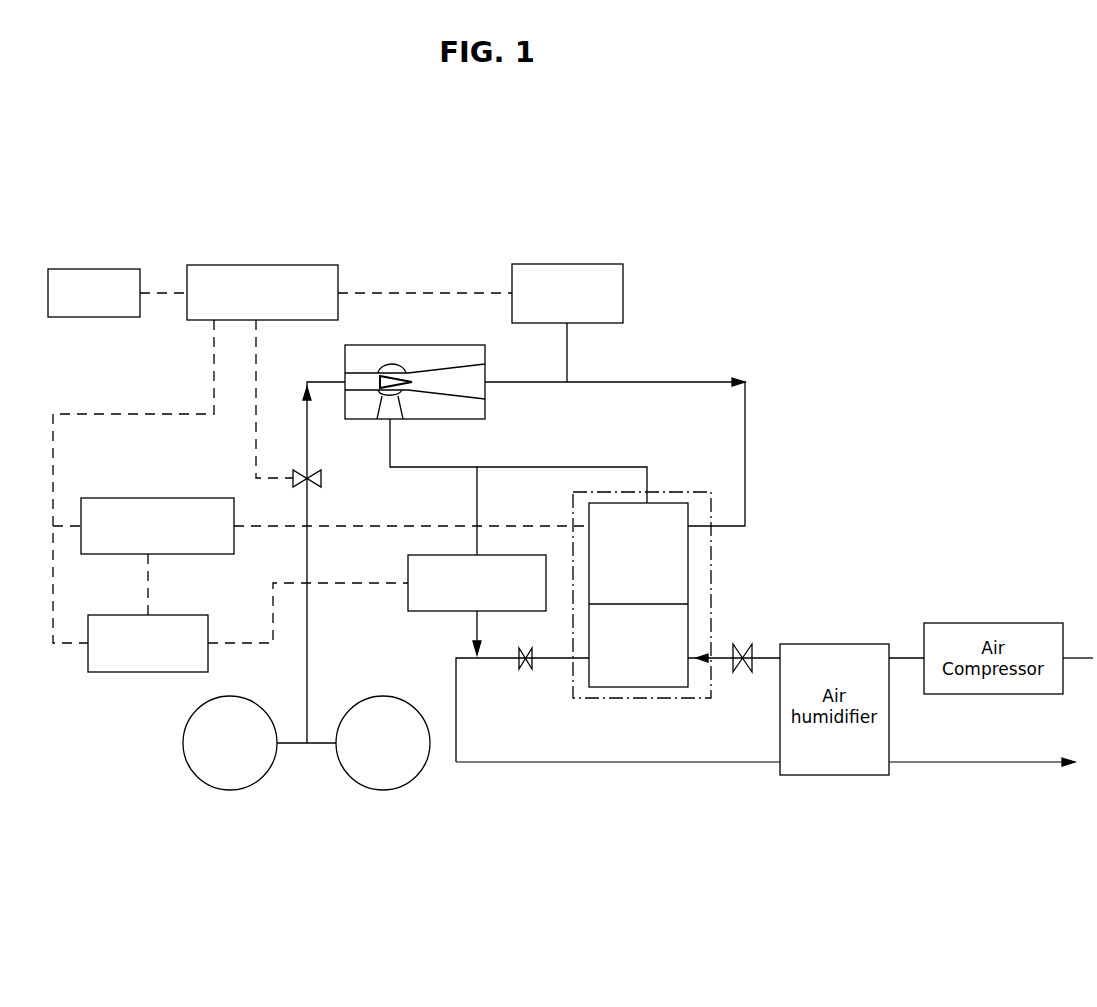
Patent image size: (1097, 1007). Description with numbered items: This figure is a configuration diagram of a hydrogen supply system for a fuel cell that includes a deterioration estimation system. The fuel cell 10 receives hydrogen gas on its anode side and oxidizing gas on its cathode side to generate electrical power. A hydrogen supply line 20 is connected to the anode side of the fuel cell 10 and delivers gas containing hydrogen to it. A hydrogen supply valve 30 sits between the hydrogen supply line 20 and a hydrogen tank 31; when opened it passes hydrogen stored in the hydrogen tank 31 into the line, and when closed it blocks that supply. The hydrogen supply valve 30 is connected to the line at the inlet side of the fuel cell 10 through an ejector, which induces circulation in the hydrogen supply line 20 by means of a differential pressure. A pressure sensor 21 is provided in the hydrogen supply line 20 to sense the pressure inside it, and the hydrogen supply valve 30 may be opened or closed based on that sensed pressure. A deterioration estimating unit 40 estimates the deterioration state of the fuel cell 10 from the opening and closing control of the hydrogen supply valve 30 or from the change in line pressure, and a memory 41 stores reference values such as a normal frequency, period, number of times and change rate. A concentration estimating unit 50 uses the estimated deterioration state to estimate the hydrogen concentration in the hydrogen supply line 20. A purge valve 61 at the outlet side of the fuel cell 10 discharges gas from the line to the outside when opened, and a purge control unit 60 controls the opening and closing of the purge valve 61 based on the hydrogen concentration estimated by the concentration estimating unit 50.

The fuel cell 10 is at (711, 577).
The hydrogen supply line 20 is at (698, 381).
The pressure sensor 21 is at (543, 264).
The hydrogen supply valve 30 is at (321, 478).
The hydrogen tank 31 is at (349, 775).
The deterioration estimating unit 40 is at (212, 265).
The memory 41 is at (87, 269).
The concentration estimating unit 50 is at (126, 498).
The purge control unit 60 is at (129, 672).
The purge valve 61 is at (408, 604).